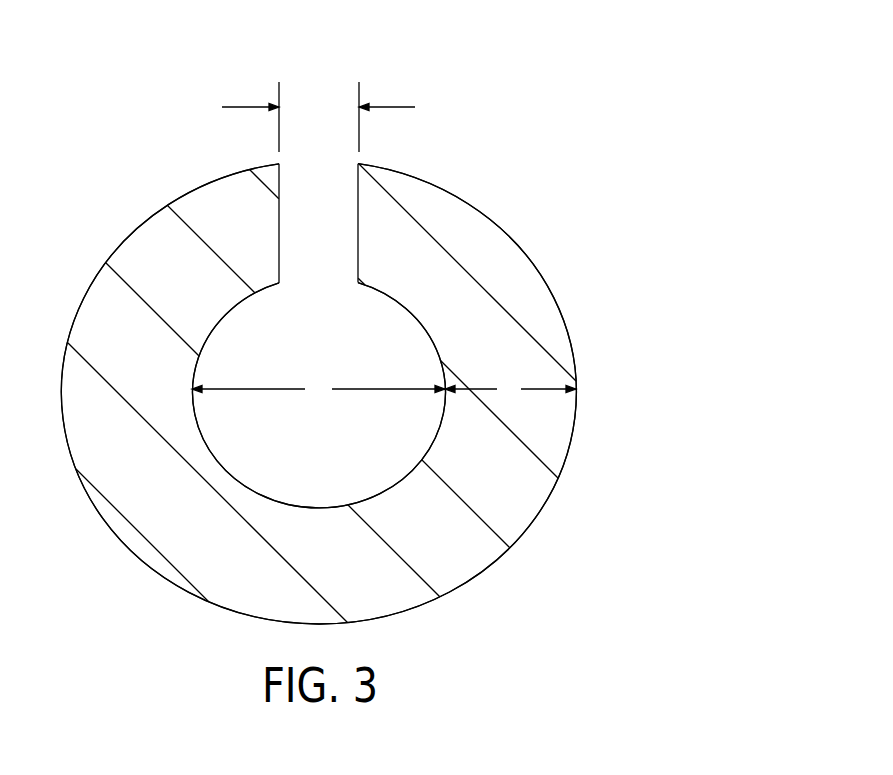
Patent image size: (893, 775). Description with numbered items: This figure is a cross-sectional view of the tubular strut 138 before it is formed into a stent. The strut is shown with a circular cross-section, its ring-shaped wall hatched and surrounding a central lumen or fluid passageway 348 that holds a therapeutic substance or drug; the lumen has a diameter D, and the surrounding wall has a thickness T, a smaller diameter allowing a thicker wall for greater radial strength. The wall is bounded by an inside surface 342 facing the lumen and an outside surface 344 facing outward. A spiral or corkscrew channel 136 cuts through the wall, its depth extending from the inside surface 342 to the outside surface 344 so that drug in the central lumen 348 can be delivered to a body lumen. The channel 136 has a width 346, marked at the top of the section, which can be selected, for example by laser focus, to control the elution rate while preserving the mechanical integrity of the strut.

The tubular strut 138 is at (566, 211).
The channel 136 is at (341, 239).
The inside surface 342 is at (228, 315).
The outside surface 344 is at (567, 460).
The width 346 is at (385, 107).
The central lumen or fluid passageway 348 is at (341, 471).